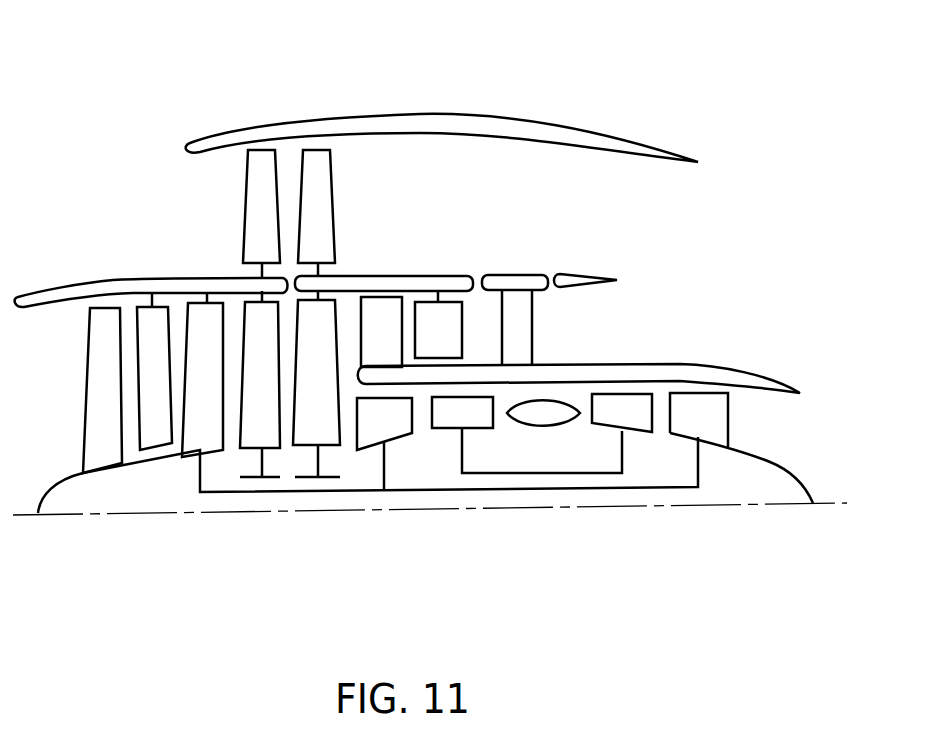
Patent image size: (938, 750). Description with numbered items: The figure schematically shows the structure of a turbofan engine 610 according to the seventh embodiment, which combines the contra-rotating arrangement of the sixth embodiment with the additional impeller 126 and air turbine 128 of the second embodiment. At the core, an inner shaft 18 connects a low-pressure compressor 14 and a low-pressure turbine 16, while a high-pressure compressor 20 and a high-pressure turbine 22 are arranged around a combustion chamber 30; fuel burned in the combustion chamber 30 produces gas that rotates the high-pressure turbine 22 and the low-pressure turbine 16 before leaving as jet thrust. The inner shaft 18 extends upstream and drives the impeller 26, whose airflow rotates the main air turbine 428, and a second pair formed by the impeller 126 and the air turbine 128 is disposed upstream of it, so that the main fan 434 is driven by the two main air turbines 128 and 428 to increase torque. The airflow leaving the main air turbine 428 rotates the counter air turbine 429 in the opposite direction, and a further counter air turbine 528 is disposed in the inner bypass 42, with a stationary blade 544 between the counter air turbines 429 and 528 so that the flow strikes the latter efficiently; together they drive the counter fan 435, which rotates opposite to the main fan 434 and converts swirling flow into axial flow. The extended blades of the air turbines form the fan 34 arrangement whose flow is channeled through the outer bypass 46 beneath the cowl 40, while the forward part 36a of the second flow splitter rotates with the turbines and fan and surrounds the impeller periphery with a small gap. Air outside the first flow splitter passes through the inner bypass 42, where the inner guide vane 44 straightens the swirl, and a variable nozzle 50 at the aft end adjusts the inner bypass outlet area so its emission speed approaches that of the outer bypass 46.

The turbofan engine 610 is at (731, 82).
The cowl 40 is at (415, 115).
The outer bypass 46 is at (477, 172).
The main fan 434 is at (257, 195).
The counter fan 435 is at (328, 203).
The forward part of the second flow splitter 36a is at (117, 277).
The variable nozzle 50 is at (583, 276).
The impeller 126 is at (90, 395).
The air turbine 128 is at (148, 304).
The impeller 26 is at (207, 307).
The main air turbine 428 is at (274, 437).
The counter air turbine 429 is at (330, 436).
The stationary blade 544 is at (381, 298).
The counter air turbine 528 is at (457, 349).
The inner guide vane 44 is at (525, 320).
The inner bypass 42 is at (567, 359).
The low-pressure compressor 14 is at (400, 428).
The high-pressure compressor 20 is at (472, 424).
The combustion chamber 30 is at (566, 420).
The high-pressure turbine 22 is at (638, 428).
The low-pressure turbine 16 is at (725, 420).
The inner shaft 18 is at (627, 488).
The fan 34 is at (546, 473).